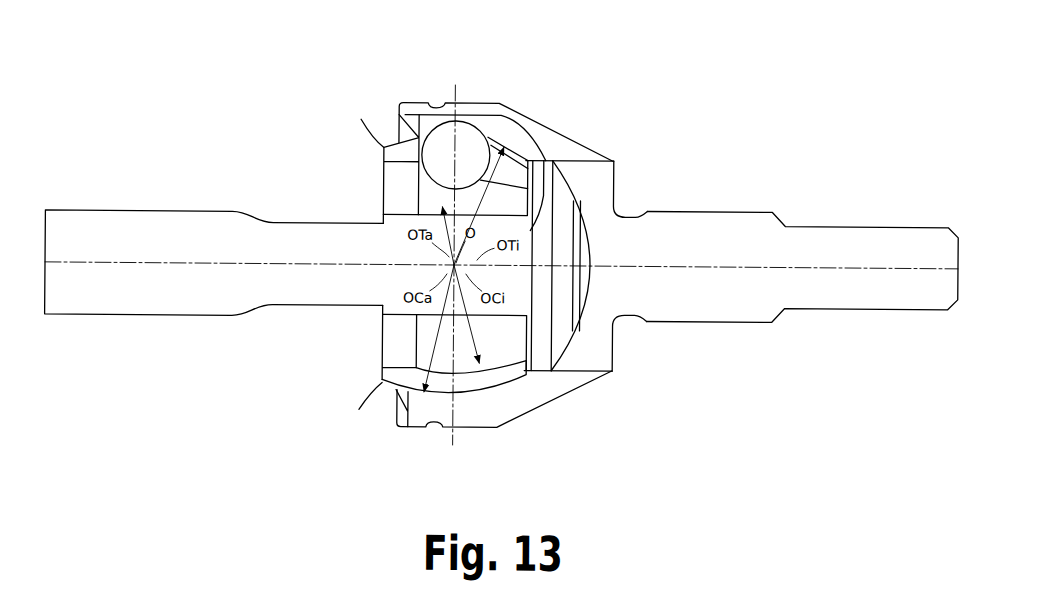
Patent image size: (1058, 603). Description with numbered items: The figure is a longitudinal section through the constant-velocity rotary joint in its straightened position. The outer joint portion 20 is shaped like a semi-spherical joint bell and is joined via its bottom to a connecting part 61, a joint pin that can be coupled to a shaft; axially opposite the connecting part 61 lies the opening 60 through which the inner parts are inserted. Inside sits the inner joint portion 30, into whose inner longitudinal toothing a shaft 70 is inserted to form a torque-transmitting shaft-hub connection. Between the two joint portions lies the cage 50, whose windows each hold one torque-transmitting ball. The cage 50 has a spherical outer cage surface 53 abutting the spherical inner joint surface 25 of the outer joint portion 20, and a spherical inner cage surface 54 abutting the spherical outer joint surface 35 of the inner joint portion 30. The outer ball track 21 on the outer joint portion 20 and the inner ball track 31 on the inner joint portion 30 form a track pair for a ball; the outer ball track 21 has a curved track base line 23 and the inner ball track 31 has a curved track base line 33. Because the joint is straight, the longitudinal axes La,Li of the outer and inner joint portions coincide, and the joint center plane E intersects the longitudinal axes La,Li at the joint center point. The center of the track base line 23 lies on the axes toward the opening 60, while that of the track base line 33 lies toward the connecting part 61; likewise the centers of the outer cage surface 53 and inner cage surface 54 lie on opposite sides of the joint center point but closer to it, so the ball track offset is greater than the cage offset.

The outer joint portion 20 is at (552, 148).
The outer ball track 21 is at (498, 150).
The track base line 23 is at (490, 127).
The spherical inner joint surface 25 is at (490, 388).
The inner joint portion 30 is at (507, 198).
The inner ball track 31 is at (418, 192).
The track base line 33 is at (420, 201).
The spherical outer joint surface 35 is at (505, 367).
The cage 50 is at (380, 147).
The spherical outer cage surface 53 is at (388, 386).
The spherical inner cage surface 54 is at (424, 362).
The opening 60 is at (358, 354).
The connecting part 61 is at (718, 228).
The shaft 70 is at (213, 222).
The joint center plane E is at (453, 85).
The longitudinal axes La,Li is at (860, 268).